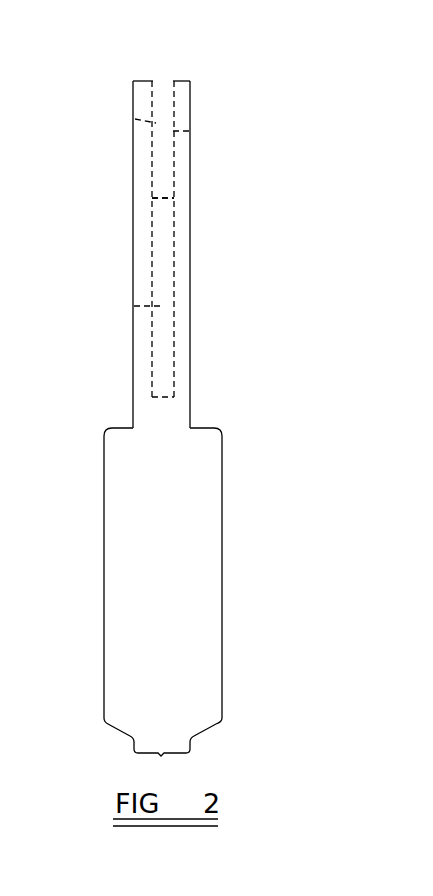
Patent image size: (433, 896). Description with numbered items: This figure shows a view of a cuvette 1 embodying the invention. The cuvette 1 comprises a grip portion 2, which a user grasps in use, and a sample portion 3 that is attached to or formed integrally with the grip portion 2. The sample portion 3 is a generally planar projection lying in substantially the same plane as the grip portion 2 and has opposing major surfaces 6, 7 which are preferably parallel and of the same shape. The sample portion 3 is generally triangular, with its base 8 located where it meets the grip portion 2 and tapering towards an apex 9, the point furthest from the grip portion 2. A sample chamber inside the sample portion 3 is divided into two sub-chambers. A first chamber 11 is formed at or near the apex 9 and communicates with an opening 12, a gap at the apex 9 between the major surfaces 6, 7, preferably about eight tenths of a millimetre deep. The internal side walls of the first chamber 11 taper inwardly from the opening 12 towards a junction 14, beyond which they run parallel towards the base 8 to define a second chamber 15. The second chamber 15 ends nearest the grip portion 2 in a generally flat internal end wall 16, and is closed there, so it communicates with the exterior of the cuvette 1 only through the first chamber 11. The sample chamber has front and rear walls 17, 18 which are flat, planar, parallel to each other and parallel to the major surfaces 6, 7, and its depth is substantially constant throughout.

The cuvette 1 is at (116, 180).
The grip portion 2 is at (163, 592).
The sample portion 3 is at (212, 188).
The major surface 6 is at (134, 278).
The major surface 7 is at (190, 282).
The base 8 is at (191, 421).
The apex 9 is at (128, 73).
The first chamber 11 is at (133, 117).
The opening 12 is at (163, 88).
The junction 14 is at (174, 199).
The second chamber 15 is at (134, 306).
The internal end wall 16 is at (160, 410).
The front wall 17 is at (152, 219).
The rear wall 18 is at (192, 131).